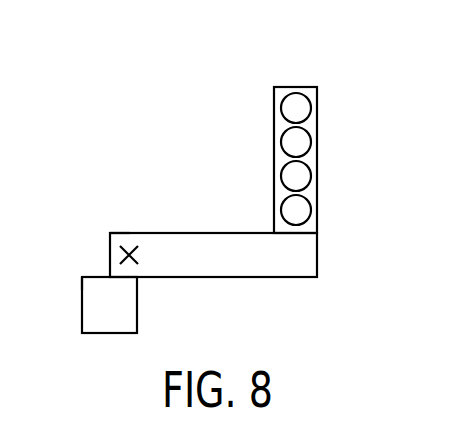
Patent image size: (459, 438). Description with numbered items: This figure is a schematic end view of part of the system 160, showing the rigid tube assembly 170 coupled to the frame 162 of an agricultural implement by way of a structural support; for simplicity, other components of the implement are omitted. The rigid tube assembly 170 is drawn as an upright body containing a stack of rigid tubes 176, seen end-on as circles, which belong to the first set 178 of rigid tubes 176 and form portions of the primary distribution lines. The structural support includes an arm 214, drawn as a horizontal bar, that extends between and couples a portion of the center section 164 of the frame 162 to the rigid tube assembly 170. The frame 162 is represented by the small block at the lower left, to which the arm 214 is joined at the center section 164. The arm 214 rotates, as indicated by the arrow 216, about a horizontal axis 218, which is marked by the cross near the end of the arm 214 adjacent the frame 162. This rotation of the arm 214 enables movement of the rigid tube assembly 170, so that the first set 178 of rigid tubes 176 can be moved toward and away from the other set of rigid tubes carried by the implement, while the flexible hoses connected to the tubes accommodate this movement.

The system 160 is at (214, 181).
The frame 162 is at (82, 308).
The center section 164 is at (81, 290).
The rigid tube assembly 170 is at (316, 129).
The rigid tubes 176 is at (297, 108).
The first set of rigid tubes 178 is at (323, 162).
The arm 214 is at (213, 253).
The arrow 216 is at (146, 211).
The horizontal axis 218 is at (138, 258).